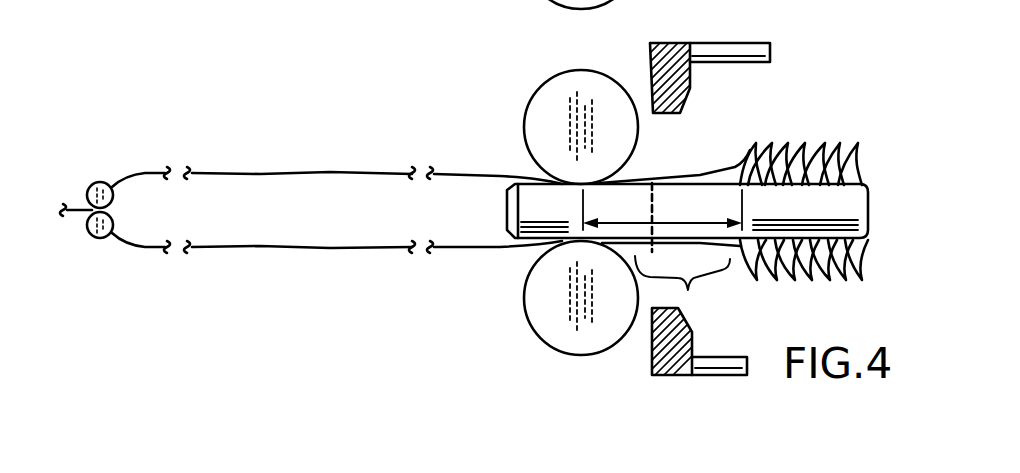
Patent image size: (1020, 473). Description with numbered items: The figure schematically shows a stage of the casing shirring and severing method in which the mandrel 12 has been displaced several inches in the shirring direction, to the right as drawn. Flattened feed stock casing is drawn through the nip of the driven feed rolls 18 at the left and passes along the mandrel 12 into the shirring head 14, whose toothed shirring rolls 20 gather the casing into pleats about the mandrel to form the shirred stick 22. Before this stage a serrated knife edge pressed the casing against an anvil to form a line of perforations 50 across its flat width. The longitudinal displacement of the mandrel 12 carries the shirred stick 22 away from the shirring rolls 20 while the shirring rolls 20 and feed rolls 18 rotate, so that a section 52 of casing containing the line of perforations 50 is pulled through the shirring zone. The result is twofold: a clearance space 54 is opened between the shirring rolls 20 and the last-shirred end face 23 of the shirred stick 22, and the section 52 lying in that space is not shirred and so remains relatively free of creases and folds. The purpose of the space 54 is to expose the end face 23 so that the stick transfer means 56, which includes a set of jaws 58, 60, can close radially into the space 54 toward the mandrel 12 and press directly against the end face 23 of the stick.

The mandrel 12 is at (848, 197).
The shirring head 14 is at (508, 92).
The feed rolls 18 is at (100, 182).
The shirring rolls 20 is at (545, 338).
The shirred stick 22 is at (850, 131).
The last-shirred end face 23 is at (746, 152).
The line of perforations 50 is at (652, 183).
The section of casing 52 is at (697, 221).
The space 54 is at (683, 285).
The stick transfer means 56 is at (733, 30).
The jaw 58 is at (650, 70).
The jaw 60 is at (652, 355).